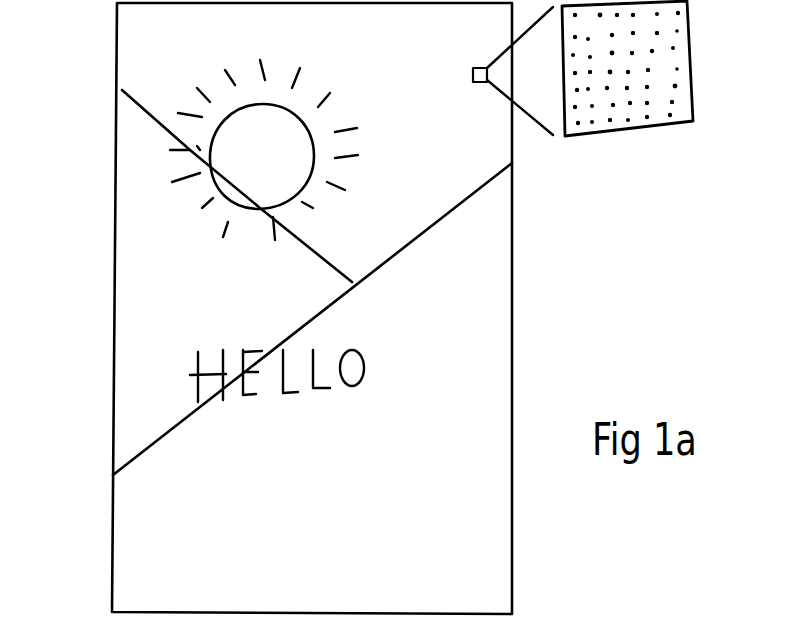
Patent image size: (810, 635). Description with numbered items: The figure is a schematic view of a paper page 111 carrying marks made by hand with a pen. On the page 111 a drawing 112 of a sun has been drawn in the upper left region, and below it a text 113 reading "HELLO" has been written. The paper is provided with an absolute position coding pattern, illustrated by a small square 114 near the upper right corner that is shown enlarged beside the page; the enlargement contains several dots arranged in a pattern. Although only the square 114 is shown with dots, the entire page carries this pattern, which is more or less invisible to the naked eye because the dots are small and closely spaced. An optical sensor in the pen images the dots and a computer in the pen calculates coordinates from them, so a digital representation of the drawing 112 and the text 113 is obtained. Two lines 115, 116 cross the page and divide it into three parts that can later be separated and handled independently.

The paper page 111 is at (512, 313).
The drawing 112 is at (210, 176).
The text 113 is at (200, 372).
The small square 114 is at (481, 84).
The line 115 is at (455, 208).
The line 116 is at (146, 113).